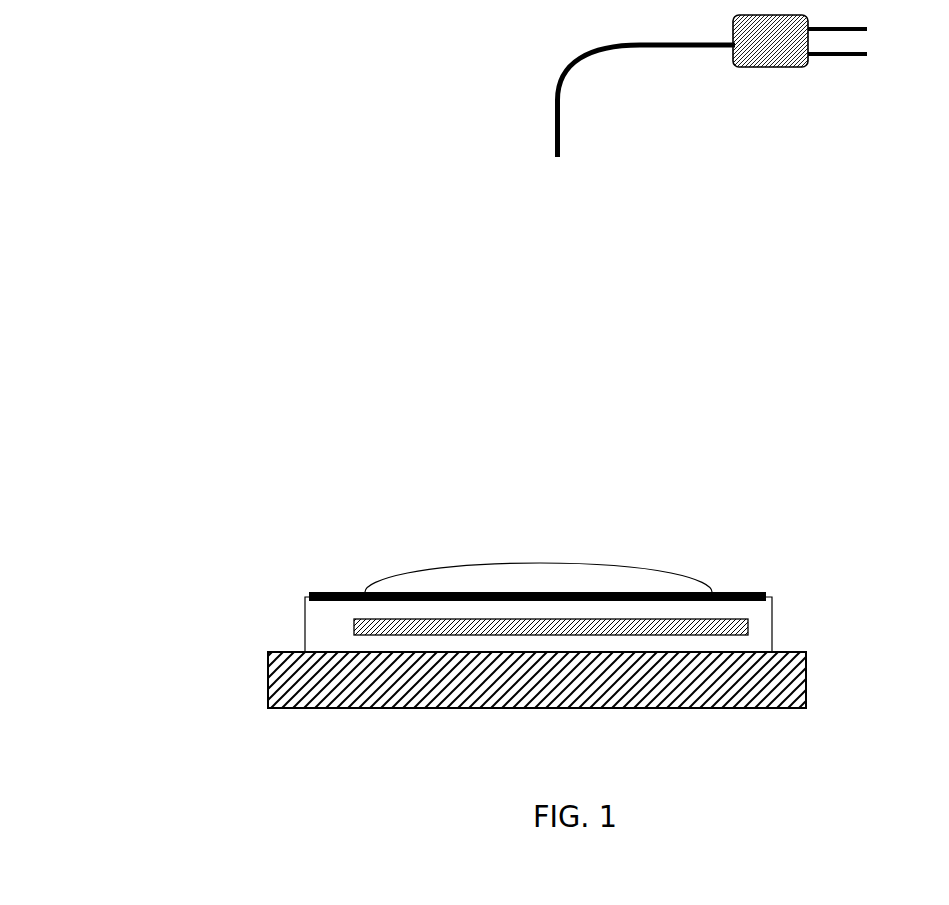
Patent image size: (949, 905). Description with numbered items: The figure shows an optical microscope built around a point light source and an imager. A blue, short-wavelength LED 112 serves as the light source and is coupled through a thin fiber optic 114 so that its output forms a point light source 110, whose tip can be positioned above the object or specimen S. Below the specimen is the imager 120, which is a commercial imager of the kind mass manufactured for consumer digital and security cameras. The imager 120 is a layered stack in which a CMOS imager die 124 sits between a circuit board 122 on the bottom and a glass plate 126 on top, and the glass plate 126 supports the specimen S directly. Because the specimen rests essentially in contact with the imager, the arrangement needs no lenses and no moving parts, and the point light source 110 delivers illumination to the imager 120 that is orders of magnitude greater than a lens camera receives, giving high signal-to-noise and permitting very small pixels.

The point light source 110 is at (733, 128).
The LED 112 is at (786, 79).
The fiber optic 114 is at (600, 89).
The imager 120 is at (495, 568).
The circuit board 122 is at (818, 664).
The CMOS imager die 124 is at (567, 619).
The glass plate 126 is at (327, 578).
The specimen S is at (600, 547).